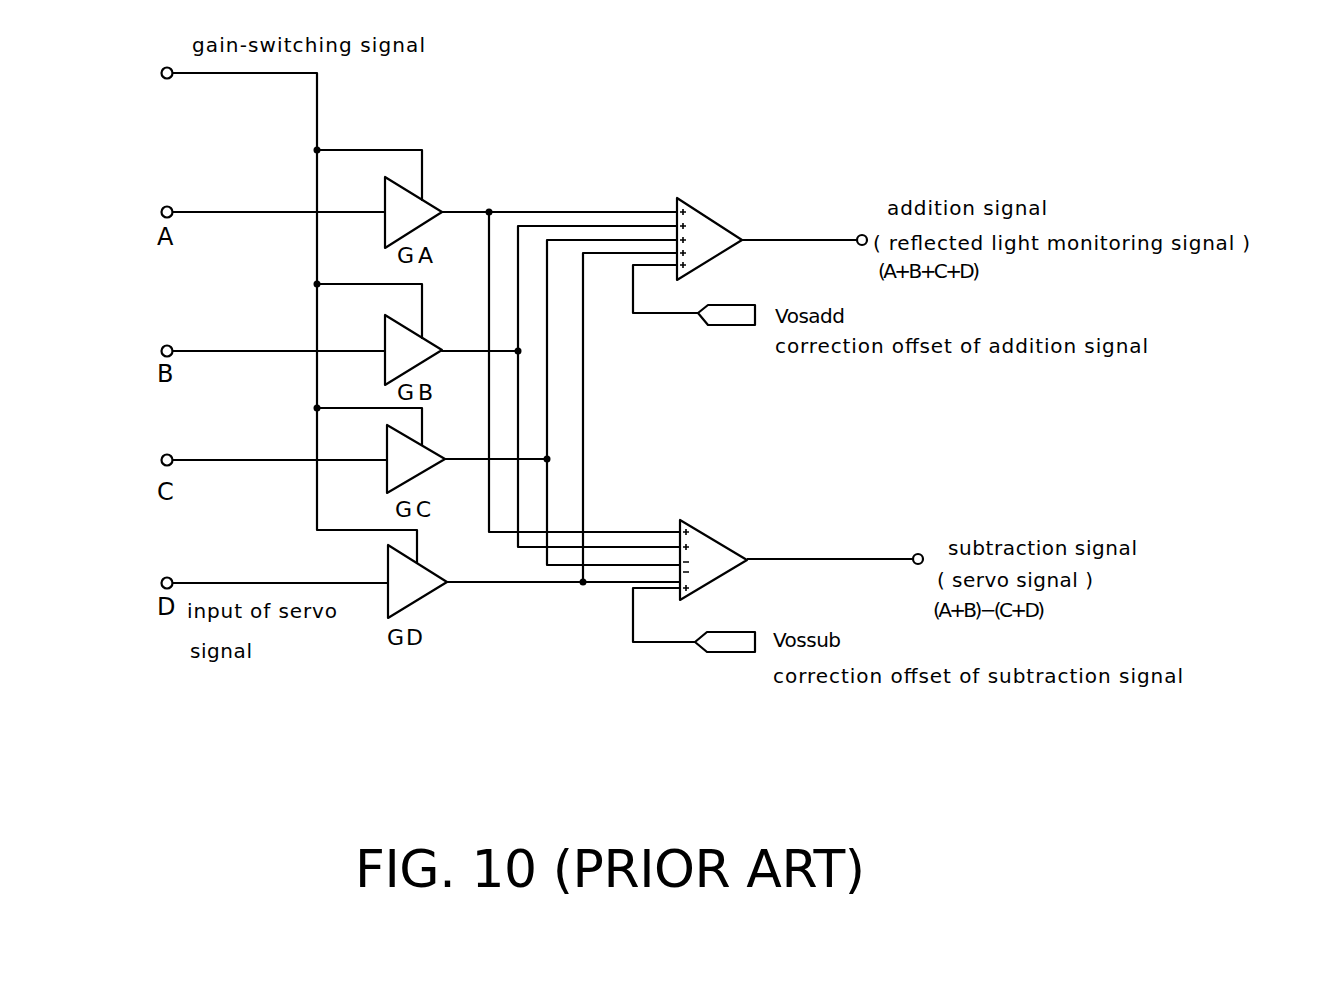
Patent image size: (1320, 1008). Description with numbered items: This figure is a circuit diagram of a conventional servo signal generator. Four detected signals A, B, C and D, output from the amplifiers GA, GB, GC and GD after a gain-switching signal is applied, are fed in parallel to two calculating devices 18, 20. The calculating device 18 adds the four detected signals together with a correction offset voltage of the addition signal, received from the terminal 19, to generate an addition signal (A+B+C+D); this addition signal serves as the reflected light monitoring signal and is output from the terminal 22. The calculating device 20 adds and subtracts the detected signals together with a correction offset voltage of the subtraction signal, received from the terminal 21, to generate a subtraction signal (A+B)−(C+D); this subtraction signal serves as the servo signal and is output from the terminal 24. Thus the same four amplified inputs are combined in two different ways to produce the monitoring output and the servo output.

The calculating device 18 is at (720, 223).
The terminal 19 is at (722, 303).
The calculating device 20 is at (723, 542).
The terminal 21 is at (723, 627).
The terminal 22 is at (862, 234).
The terminal 24 is at (918, 553).